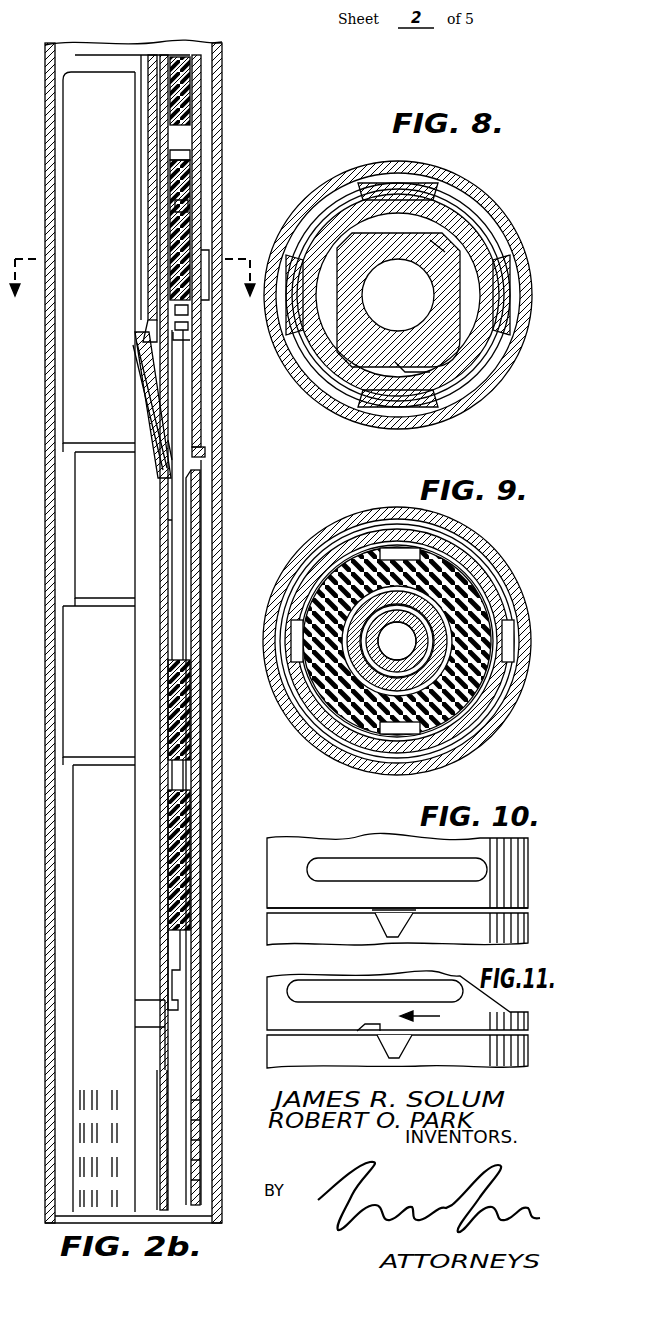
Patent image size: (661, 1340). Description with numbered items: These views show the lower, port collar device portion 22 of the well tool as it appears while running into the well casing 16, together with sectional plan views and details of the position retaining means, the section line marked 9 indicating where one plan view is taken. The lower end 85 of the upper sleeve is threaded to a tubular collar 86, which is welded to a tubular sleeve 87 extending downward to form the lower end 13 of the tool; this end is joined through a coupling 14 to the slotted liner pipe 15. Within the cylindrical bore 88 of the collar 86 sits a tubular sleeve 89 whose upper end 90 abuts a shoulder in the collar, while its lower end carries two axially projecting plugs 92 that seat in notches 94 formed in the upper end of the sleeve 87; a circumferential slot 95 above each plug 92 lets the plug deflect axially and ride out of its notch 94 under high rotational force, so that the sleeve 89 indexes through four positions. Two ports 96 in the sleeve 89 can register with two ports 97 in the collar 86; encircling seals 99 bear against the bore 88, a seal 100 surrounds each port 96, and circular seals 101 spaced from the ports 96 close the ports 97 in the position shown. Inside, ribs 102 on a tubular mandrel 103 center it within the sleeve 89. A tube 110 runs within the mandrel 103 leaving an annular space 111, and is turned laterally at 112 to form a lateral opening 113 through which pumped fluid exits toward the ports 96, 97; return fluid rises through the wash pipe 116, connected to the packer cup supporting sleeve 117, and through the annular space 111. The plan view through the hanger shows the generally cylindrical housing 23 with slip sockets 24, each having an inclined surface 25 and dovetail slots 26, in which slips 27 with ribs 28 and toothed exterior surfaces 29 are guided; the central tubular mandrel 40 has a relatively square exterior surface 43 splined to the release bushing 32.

In FIG. 2B, the lower end 13 is at (208, 549).
In FIG. 2B, the coupling 14 is at (203, 720).
In FIG. 2B, the liner pipe 15 is at (195, 1071).
In FIG. 8, the well casing 16 is at (349, 180).
In FIG. 9, the well casing 16 is at (335, 538).
In FIG. 2B, the port collar device portion 22 is at (78, 167).
In FIG. 8, the housing 23 is at (320, 373).
In FIG. 8, the slip socket 24 is at (494, 262).
In FIG. 8, the inclined surface 25 is at (427, 397).
In FIG. 8, the dovetail slot 26 is at (432, 356).
In FIG. 8, the slip 27 is at (422, 190).
In FIG. 8, the rib 28 is at (360, 196).
In FIG. 8, the toothed exterior surface 29 is at (384, 182).
In FIG. 8, the release bushing 32 is at (345, 398).
In FIG. 8, the tubular mandrel 40 is at (440, 253).
In FIG. 8, the non-cylindrical exterior surface 43 is at (420, 234).
In FIG. 2B, the lower end of sleeve 85 is at (200, 60).
In FIG. 2B, the tubular collar 86 is at (200, 111).
In FIG. 9, the tubular collar 86 is at (450, 560).
In FIG. 2B, the tubular sleeve 87 is at (199, 476).
In FIG. 10, the tubular sleeve 87 is at (277, 937).
In FIG. 11, the tubular sleeve 87 is at (277, 1043).
In FIG. 2B, the cylindrical bore 88 is at (195, 209).
In FIG. 2B, the tubular sleeve 89 is at (197, 223).
In FIG. 9, the tubular sleeve 89 is at (447, 583).
In FIG. 10, the tubular sleeve 89 is at (294, 846).
In FIG. 11, the tubular sleeve 89 is at (277, 994).
In FIG. 2B, the upper end of sleeve 90 is at (205, 180).
In FIG. 10, the plug 92 is at (378, 913).
In FIG. 11, the plug 92 is at (367, 1029).
In FIG. 10, the notch 94 is at (407, 928).
In FIG. 11, the notch 94 is at (398, 1037).
In FIG. 10, the circumferential slot 95 is at (350, 868).
In FIG. 11, the circumferential slot 95 is at (332, 986).
In FIG. 9, the port 96 is at (392, 553).
In FIG. 2B, the port 97 is at (205, 253).
In FIG. 9, the port 97 is at (500, 613).
In FIG. 2B, the encircling seal 99 is at (196, 197).
In FIG. 9, the seal 100 is at (448, 687).
In FIG. 9, the circular seal 101 is at (473, 683).
In FIG. 2B, the rib 102 is at (180, 503).
In FIG. 2B, the tubular mandrel 103 is at (170, 527).
In FIG. 9, the tubular mandrel 103 is at (330, 688).
In FIG. 2B, the tube 110 is at (152, 203).
In FIG. 9, the tube 110 is at (420, 622).
In FIG. 9, the annular space 111 is at (302, 688).
In FIG. 2B, the lateral turn 112 is at (145, 301).
In FIG. 2B, the lateral opening 113 is at (158, 398).
In FIG. 2B, the wash pipe 116 is at (165, 1092).
In FIG. 2B, the packer cup supporting sleeve 117 is at (165, 881).
In FIG. 2B, the section line 9- 9 is at (130, 297).